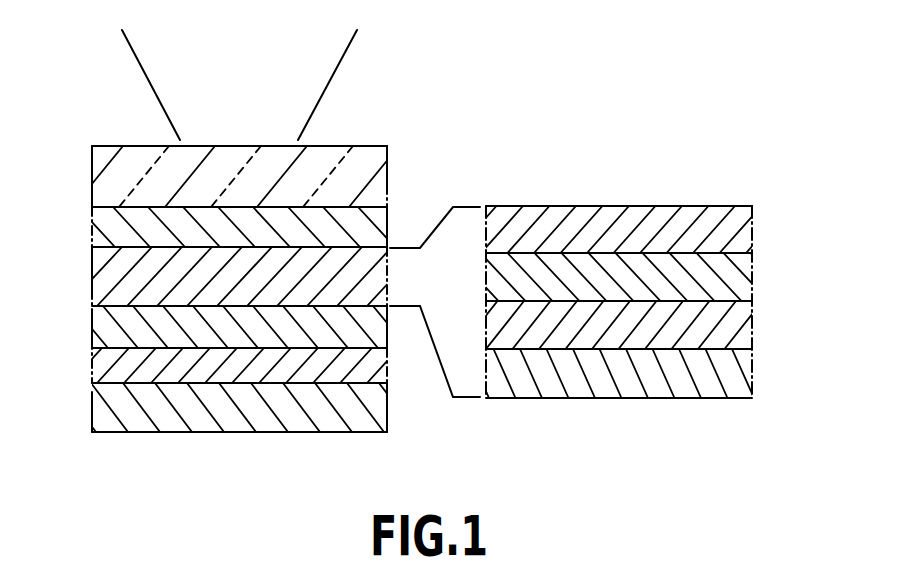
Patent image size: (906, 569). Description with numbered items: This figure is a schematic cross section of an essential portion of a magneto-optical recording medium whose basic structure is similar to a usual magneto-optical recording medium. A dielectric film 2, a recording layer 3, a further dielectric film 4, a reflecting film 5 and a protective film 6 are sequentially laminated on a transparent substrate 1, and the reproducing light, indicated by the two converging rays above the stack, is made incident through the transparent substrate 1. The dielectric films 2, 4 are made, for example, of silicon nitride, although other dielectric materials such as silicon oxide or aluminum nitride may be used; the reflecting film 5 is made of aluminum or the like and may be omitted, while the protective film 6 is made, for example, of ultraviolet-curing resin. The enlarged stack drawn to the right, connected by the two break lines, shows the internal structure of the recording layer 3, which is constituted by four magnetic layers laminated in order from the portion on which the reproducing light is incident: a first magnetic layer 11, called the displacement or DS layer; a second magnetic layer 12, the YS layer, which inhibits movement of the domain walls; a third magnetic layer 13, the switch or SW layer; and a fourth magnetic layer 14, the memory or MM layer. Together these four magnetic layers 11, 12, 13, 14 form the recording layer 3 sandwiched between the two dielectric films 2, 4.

The transparent substrate 1 is at (102, 178).
The dielectric film 2 is at (102, 228).
The recording layer 3 is at (102, 278).
The dielectric film 4 is at (102, 328).
The reflecting film 5 is at (102, 366).
The protective film 6 is at (102, 409).
The first magnetic layer 11 is at (758, 232).
The second magnetic layer 12 is at (758, 272).
The third magnetic layer 13 is at (758, 327).
The fourth magnetic layer 14 is at (758, 367).